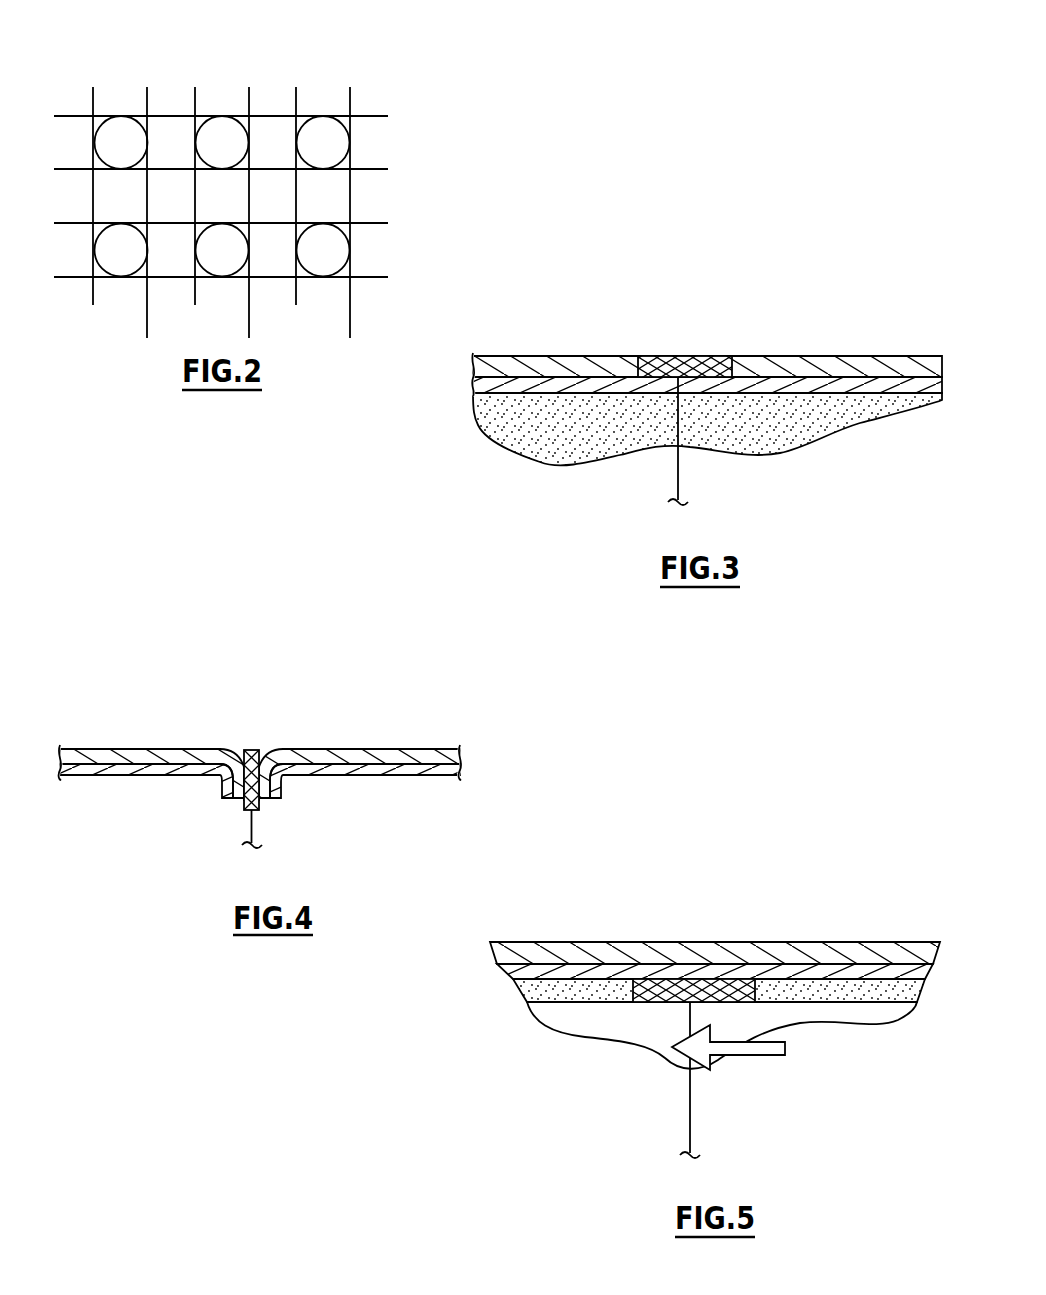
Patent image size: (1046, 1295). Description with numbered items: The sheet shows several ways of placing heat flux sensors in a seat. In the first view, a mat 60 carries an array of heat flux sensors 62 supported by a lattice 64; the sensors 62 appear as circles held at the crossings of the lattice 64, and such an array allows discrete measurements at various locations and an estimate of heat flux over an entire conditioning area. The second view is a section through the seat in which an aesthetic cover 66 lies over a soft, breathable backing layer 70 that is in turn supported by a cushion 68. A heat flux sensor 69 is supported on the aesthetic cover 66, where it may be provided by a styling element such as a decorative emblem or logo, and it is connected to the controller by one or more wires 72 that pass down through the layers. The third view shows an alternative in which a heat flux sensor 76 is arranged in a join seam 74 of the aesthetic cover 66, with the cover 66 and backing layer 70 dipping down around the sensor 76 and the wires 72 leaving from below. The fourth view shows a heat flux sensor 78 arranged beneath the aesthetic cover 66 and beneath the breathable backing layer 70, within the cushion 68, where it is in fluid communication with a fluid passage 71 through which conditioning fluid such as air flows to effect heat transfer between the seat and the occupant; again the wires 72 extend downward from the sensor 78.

In FIG. 2, the mat 60 is at (388, 80).
In FIG. 2, the heat flux sensors 62 is at (205, 116).
In FIG. 2, the lattice 64 is at (373, 116).
In FIG. 3, the aesthetic cover 66 is at (820, 362).
In FIG. 4, the aesthetic cover 66 is at (390, 755).
In FIG. 5, the aesthetic cover 66 is at (832, 948).
In FIG. 3, the cushion 68 is at (810, 432).
In FIG. 5, the cushion 68 is at (883, 995).
In FIG. 3, the heat flux sensor 69 is at (680, 365).
In FIG. 5, the heat flux sensor 69 is at (727, 950).
In FIG. 3, the soft backing layer 70 is at (860, 385).
In FIG. 4, the soft backing layer 70 is at (355, 770).
In FIG. 5, the soft backing layer 70 is at (872, 970).
In FIG. 5, the fluid passage 71 is at (630, 1032).
In FIG. 3, the wires 72 is at (678, 480).
In FIG. 4, the wires 72 is at (253, 823).
In FIG. 5, the wires 72 is at (690, 1110).
In FIG. 4, the join seam 74 is at (268, 730).
In FIG. 4, the heat flux sensor 76 is at (243, 752).
In FIG. 5, the heat flux sensor 78 is at (648, 987).